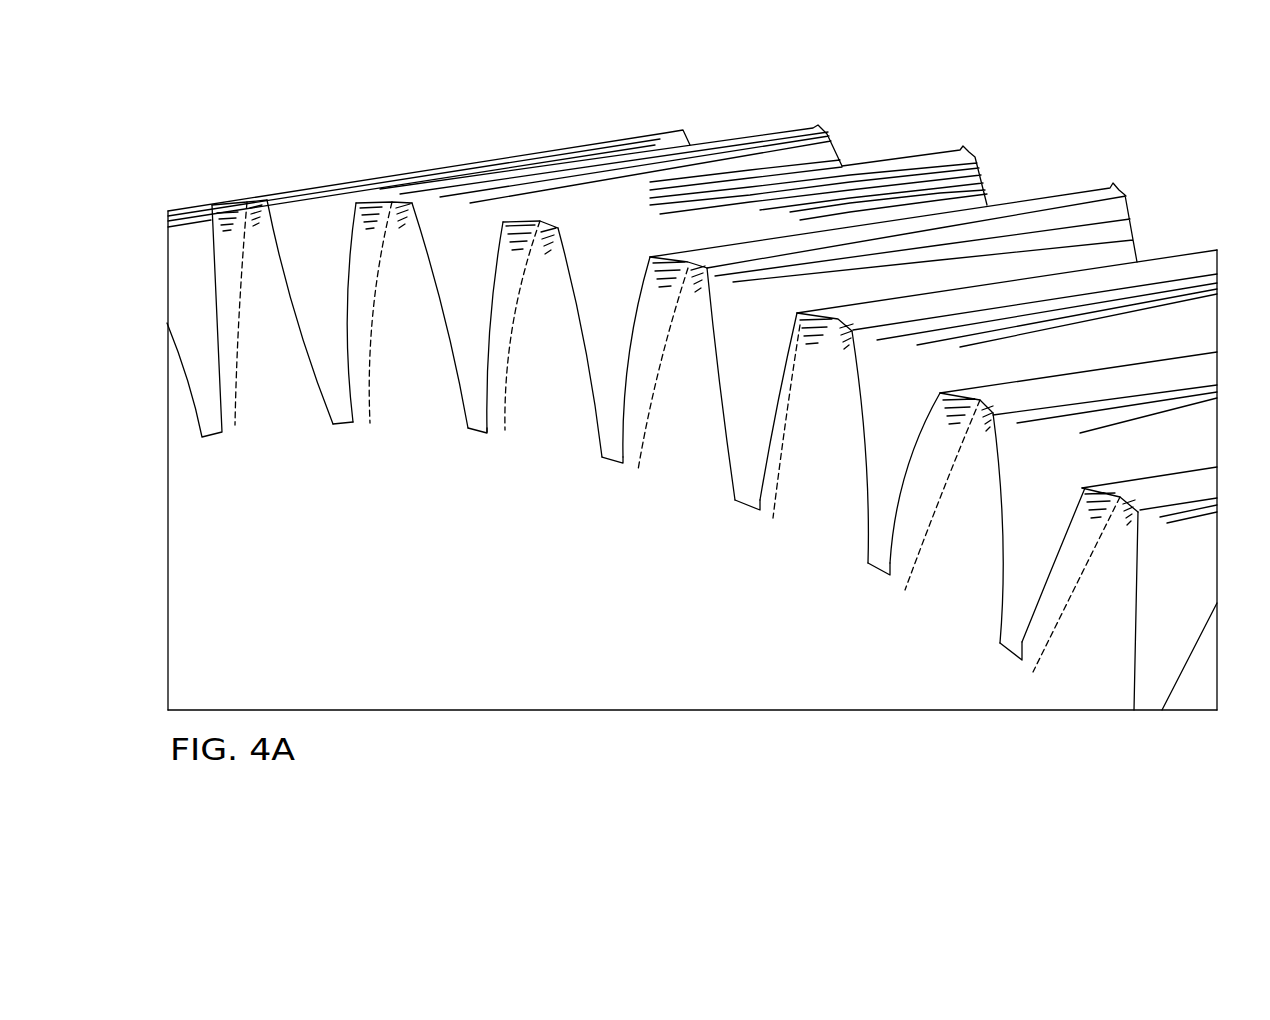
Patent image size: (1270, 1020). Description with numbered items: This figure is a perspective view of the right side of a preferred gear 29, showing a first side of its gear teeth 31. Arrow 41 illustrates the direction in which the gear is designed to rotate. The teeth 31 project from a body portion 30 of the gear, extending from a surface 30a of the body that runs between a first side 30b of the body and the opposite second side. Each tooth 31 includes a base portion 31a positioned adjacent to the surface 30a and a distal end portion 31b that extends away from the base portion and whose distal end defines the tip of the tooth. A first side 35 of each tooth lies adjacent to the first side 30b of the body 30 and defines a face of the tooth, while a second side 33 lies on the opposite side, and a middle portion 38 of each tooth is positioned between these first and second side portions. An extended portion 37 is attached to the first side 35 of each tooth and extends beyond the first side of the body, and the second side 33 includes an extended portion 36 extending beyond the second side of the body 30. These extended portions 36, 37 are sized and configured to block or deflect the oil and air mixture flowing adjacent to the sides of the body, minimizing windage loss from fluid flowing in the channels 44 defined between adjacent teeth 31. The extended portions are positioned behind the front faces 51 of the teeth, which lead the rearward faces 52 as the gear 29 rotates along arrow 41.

The gear 29 is at (240, 145).
The body portion 30 is at (438, 589).
The surface 30a is at (1018, 640).
The first side 30b is at (745, 660).
The teeth 31 is at (707, 228).
The base portion 31a is at (333, 375).
The distal end portion 31b is at (497, 180).
The second side 33 is at (985, 188).
The first side 35 is at (760, 300).
The extended portion 36 is at (989, 150).
The extended portion 37 is at (232, 218).
The middle portion 38 is at (1110, 264).
The arrow 41 is at (775, 113).
The channels 44 is at (325, 226).
The front faces 51 is at (910, 175).
The rearward faces 52 is at (743, 180).